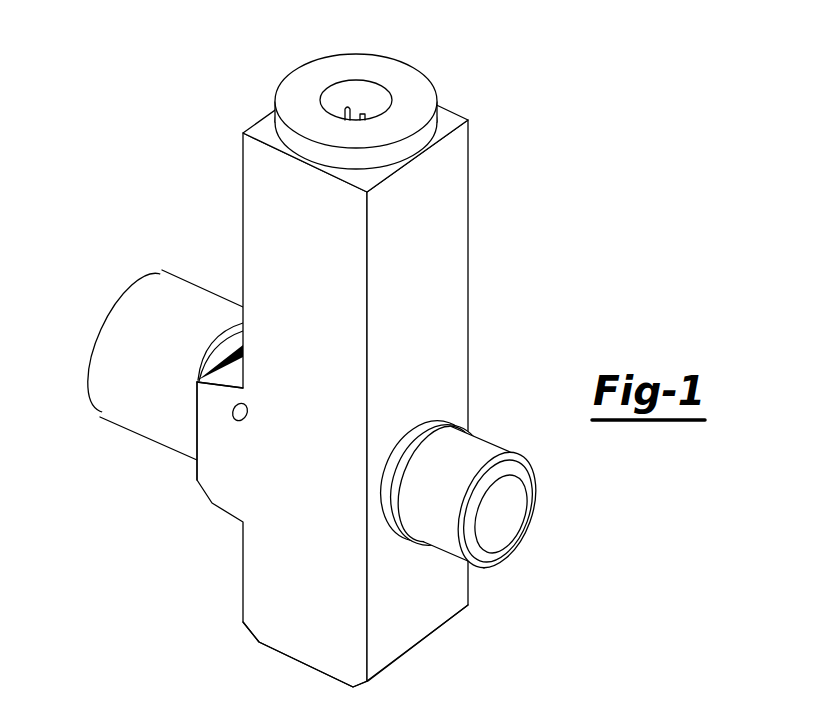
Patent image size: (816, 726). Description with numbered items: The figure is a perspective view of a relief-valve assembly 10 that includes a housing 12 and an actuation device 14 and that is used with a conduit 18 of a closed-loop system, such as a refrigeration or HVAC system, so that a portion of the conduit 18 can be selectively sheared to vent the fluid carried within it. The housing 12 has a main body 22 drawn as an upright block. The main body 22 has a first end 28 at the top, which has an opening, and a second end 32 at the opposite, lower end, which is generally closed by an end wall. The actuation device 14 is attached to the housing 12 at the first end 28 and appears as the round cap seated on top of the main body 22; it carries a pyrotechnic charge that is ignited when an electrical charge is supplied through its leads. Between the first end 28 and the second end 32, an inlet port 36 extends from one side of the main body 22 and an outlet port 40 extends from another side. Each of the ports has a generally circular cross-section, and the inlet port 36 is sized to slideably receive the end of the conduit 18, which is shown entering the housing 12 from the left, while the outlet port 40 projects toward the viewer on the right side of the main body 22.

The relief-valve assembly 10 is at (347, 347).
The housing 12 is at (340, 373).
The actuation device 14 is at (393, 60).
The conduit 18 is at (123, 427).
The main body 22 is at (260, 233).
The first end 28 is at (450, 117).
The second end 32 is at (412, 645).
The inlet port 36 is at (215, 478).
The outlet port 40 is at (483, 452).